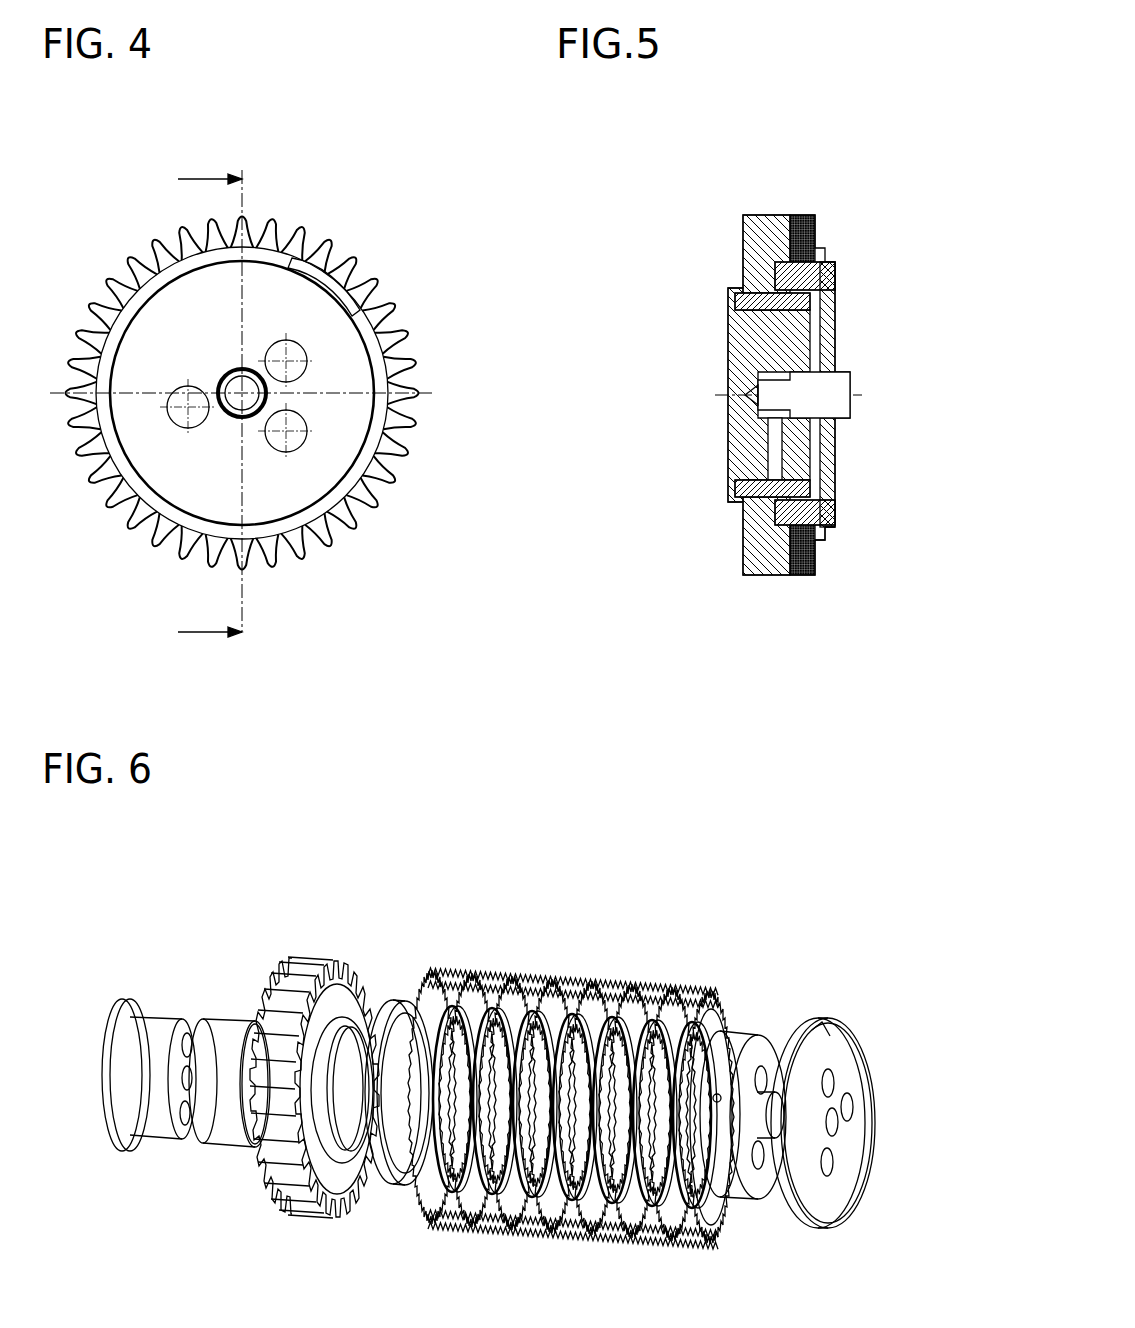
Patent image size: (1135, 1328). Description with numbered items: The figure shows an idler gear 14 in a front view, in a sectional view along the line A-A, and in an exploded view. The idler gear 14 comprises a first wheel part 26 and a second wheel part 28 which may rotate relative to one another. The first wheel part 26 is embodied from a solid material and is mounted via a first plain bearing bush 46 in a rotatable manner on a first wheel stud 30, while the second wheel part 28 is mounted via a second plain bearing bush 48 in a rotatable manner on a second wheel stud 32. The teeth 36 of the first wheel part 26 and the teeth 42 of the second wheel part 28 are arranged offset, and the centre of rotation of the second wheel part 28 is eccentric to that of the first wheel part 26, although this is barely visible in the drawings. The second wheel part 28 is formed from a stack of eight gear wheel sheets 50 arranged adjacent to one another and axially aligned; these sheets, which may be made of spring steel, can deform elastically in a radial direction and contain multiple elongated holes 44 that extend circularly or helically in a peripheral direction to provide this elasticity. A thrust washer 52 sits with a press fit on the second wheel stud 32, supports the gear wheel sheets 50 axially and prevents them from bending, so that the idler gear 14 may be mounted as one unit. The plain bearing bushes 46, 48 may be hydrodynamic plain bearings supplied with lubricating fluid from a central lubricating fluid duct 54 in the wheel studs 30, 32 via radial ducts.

In FIG. 4, the idler gear 14 is at (258, 111).
In FIG. 5, the idler gear 14 is at (778, 113).
In FIG. 6, the idler gear 14 is at (485, 833).
In FIG. 4, the first wheel part 26 is at (252, 361).
In FIG. 5, the first wheel part 26 is at (742, 240).
In FIG. 6, the first wheel part 26 is at (293, 990).
In FIG. 4, the second wheel part 28 is at (291, 219).
In FIG. 5, the second wheel part 28 is at (846, 212).
In FIG. 6, the second wheel part 28 is at (692, 938).
In FIG. 5, the first wheel stud 30 is at (742, 360).
In FIG. 6, the first wheel stud 30 is at (148, 1025).
In FIG. 5, the second wheel stud 32 is at (820, 332).
In FIG. 6, the second wheel stud 32 is at (730, 1190).
In FIG. 6, the teeth of the first wheel part 36 is at (252, 1211).
In FIG. 6, the teeth of the second wheel part 42 is at (427, 1228).
In FIG. 6, the elongated holes 44 is at (718, 1027).
In FIG. 5, the first plain bearing bush 46 is at (725, 301).
In FIG. 6, the first plain bearing bush 46 is at (233, 1030).
In FIG. 5, the second plain bearing bush 48 is at (826, 268).
In FIG. 6, the second plain bearing bush 48 is at (402, 1017).
In FIG. 4, the gear wheel sheets 50 is at (330, 250).
In FIG. 5, the gear wheel sheets 50 is at (796, 214).
In FIG. 6, the gear wheel sheets 50 is at (521, 953).
In FIG. 4, the thrust washer 52 is at (336, 461).
In FIG. 5, the thrust washer 52 is at (834, 479).
In FIG. 6, the thrust washer 52 is at (808, 1190).
In FIG. 4, the central lubricating fluid duct 54 is at (252, 402).
In FIG. 5, the central lubricating fluid duct 54 is at (826, 404).
In FIG. 6, the central lubricating fluid duct 54 is at (770, 1115).